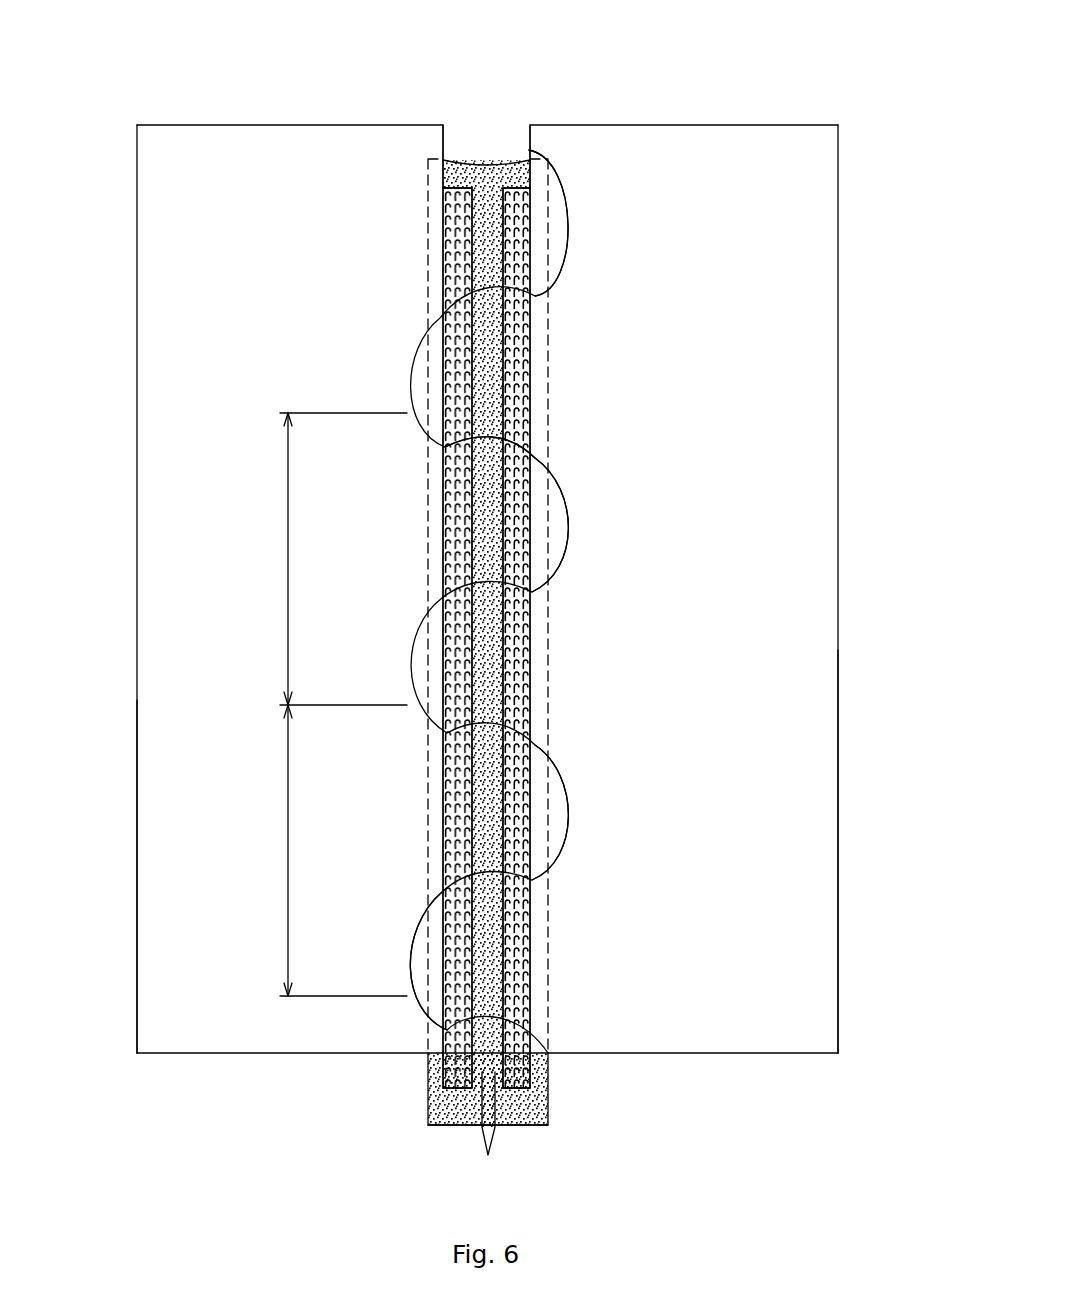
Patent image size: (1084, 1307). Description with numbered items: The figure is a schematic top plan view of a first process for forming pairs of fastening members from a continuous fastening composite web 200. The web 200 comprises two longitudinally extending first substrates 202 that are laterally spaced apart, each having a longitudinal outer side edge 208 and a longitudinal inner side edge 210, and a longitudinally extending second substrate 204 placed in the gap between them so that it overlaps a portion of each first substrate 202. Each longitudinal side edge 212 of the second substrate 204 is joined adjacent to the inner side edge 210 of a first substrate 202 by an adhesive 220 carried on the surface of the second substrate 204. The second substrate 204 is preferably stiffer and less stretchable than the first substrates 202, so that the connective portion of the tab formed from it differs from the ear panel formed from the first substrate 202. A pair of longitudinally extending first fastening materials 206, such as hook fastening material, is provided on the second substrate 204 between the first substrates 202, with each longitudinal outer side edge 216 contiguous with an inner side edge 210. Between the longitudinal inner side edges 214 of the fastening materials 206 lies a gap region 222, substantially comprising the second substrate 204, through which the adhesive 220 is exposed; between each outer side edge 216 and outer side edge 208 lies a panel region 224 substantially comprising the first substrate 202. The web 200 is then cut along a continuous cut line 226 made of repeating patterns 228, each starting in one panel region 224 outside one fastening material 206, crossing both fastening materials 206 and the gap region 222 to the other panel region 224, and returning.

The continuous fastening composite web 200 is at (491, 547).
The first substrate 202 is at (162, 212).
The second substrate 204 is at (548, 1115).
The first fastening material 206 is at (511, 686).
The longitudinal outer side edge 208 is at (137, 527).
The longitudinal inner side edge 210 is at (447, 146).
The longitudinal side edge 212 is at (428, 475).
The longitudinal inner side edge 214 is at (476, 637).
The longitudinal outer side edge 216 is at (500, 640).
The adhesive 220 is at (491, 168).
The gap region 222 is at (500, 470).
The panel region 224 is at (162, 335).
The continuous cut line 226 is at (565, 235).
The repeating pattern 228 is at (288, 563).